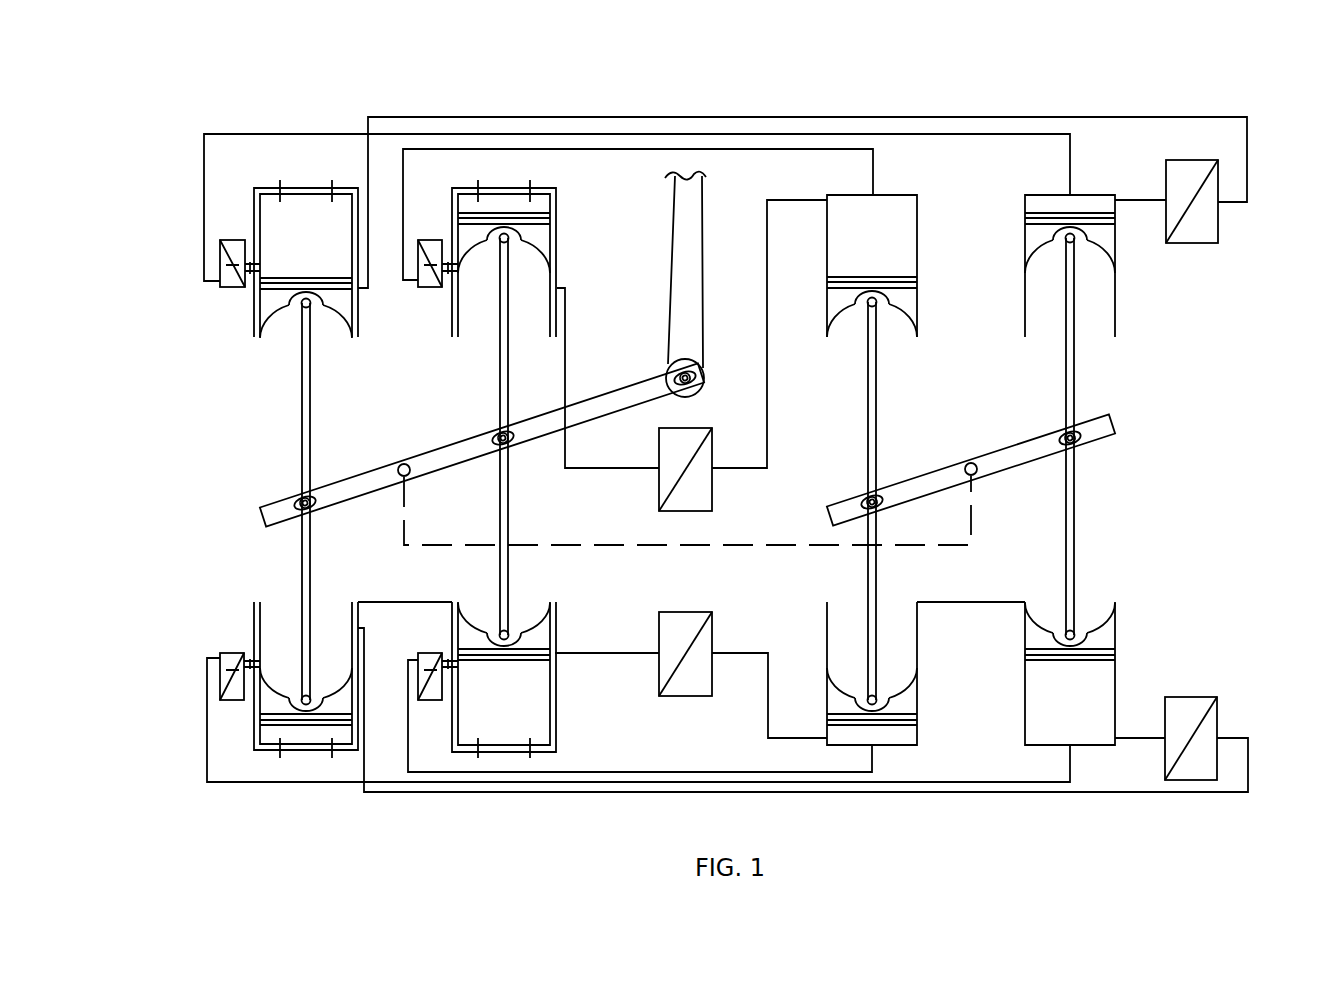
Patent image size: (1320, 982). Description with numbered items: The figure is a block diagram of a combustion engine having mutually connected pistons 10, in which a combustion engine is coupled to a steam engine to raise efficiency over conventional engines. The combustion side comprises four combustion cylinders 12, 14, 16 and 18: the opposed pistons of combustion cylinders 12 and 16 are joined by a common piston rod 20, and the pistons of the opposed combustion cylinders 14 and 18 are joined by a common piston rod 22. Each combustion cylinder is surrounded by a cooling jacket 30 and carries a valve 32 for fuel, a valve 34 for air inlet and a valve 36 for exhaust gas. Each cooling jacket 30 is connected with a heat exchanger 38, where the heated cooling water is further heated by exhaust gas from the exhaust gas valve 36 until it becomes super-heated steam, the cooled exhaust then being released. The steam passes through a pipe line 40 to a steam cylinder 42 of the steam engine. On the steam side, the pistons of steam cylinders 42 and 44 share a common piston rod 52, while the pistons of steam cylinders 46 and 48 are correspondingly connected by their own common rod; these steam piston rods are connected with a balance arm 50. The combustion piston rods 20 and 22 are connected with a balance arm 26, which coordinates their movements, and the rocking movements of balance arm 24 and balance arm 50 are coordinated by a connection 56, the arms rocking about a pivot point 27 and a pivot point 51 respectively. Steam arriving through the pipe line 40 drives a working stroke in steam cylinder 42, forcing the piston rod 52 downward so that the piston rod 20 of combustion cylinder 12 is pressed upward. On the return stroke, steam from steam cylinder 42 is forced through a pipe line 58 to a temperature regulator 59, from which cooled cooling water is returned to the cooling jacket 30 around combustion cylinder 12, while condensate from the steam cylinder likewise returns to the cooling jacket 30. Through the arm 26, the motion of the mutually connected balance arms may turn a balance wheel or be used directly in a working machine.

The combustion engine having mutually connected pistons 10 is at (318, 85).
The combustion cylinder 12 is at (244, 232).
The combustion cylinder 14 is at (540, 203).
The combustion cylinder 16 is at (258, 737).
The combustion cylinder 18 is at (530, 705).
The piston rod 20 is at (302, 403).
The piston rod 22 is at (508, 495).
The balance arm 24 is at (433, 448).
The balance arm 26 is at (670, 255).
The pivot point 27 is at (398, 476).
The cooling jacket 30 is at (253, 212).
The valve for fuel 32 is at (280, 185).
The valve for air inlet 34 is at (331, 185).
The valve for exhaust gas 36 is at (250, 275).
The heat exchanger 38 is at (232, 288).
The pipe line 40 is at (204, 167).
The steam cylinder 42 is at (1082, 203).
The steam cylinder 44 is at (1100, 687).
The steam cylinder 46 is at (893, 228).
The steam cylinder 48 is at (893, 740).
The balance arm 50 is at (1020, 466).
The pivot point 51 is at (975, 462).
The piston rod 52 is at (1080, 362).
The connection 56 is at (972, 530).
The pipe line 58 is at (1140, 203).
The temperature regulator 59 is at (1210, 244).